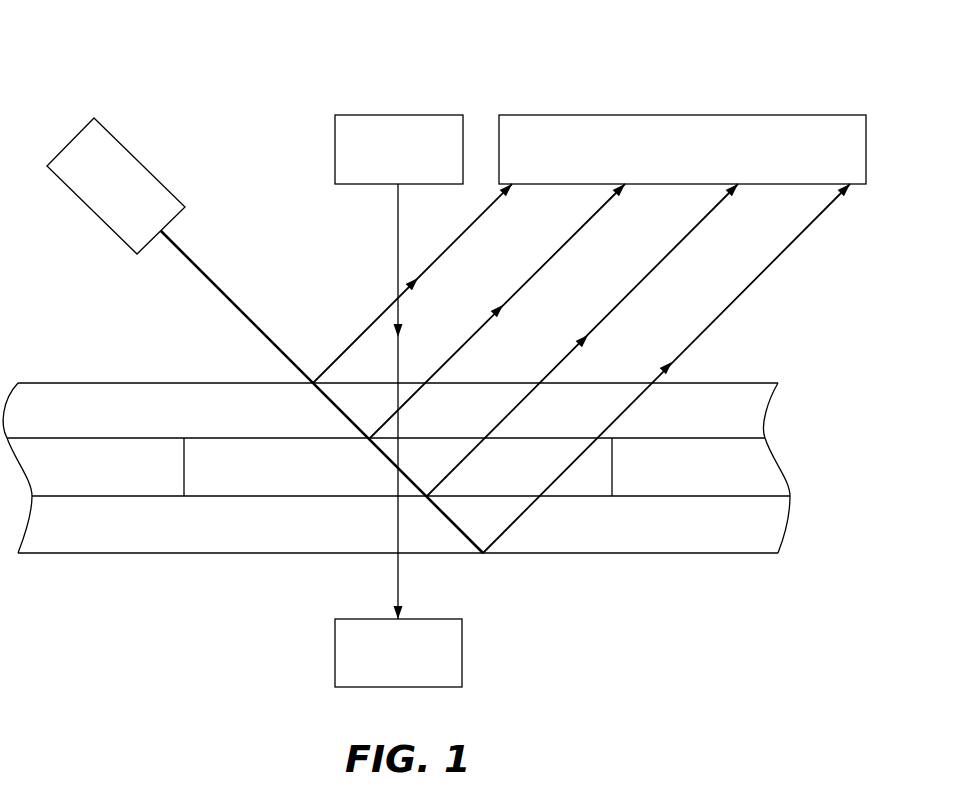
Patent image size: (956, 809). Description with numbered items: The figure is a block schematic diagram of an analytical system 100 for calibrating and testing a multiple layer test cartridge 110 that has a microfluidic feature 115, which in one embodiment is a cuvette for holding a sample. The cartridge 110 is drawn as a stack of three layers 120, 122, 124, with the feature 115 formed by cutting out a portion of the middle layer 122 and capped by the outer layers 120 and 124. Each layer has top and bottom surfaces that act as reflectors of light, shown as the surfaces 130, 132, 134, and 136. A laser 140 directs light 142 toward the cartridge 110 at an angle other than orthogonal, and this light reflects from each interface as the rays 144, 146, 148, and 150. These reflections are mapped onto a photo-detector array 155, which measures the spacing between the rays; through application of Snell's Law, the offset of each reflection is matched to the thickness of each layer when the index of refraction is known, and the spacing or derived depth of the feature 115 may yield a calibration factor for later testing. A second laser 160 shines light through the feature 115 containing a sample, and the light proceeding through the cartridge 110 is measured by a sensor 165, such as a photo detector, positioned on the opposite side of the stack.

The analytical system 100 is at (110, 30).
The cartridge 110 is at (88, 360).
The microfluidic feature 115 is at (248, 479).
The layer 120 is at (752, 418).
The layer 122 is at (764, 468).
The layer 124 is at (776, 526).
The reflector surface 130 is at (723, 383).
The reflector surface 132 is at (677, 440).
The reflector surface 134 is at (677, 498).
The reflector surface 136 is at (677, 555).
The laser 140 is at (143, 166).
The light from laser 142 is at (222, 291).
The ray 144 is at (450, 244).
The ray 146 is at (563, 244).
The ray 148 is at (676, 244).
The ray 150 is at (788, 244).
The photo-detector array 155 is at (683, 115).
The second laser 160 is at (398, 115).
The sensor 165 is at (462, 650).